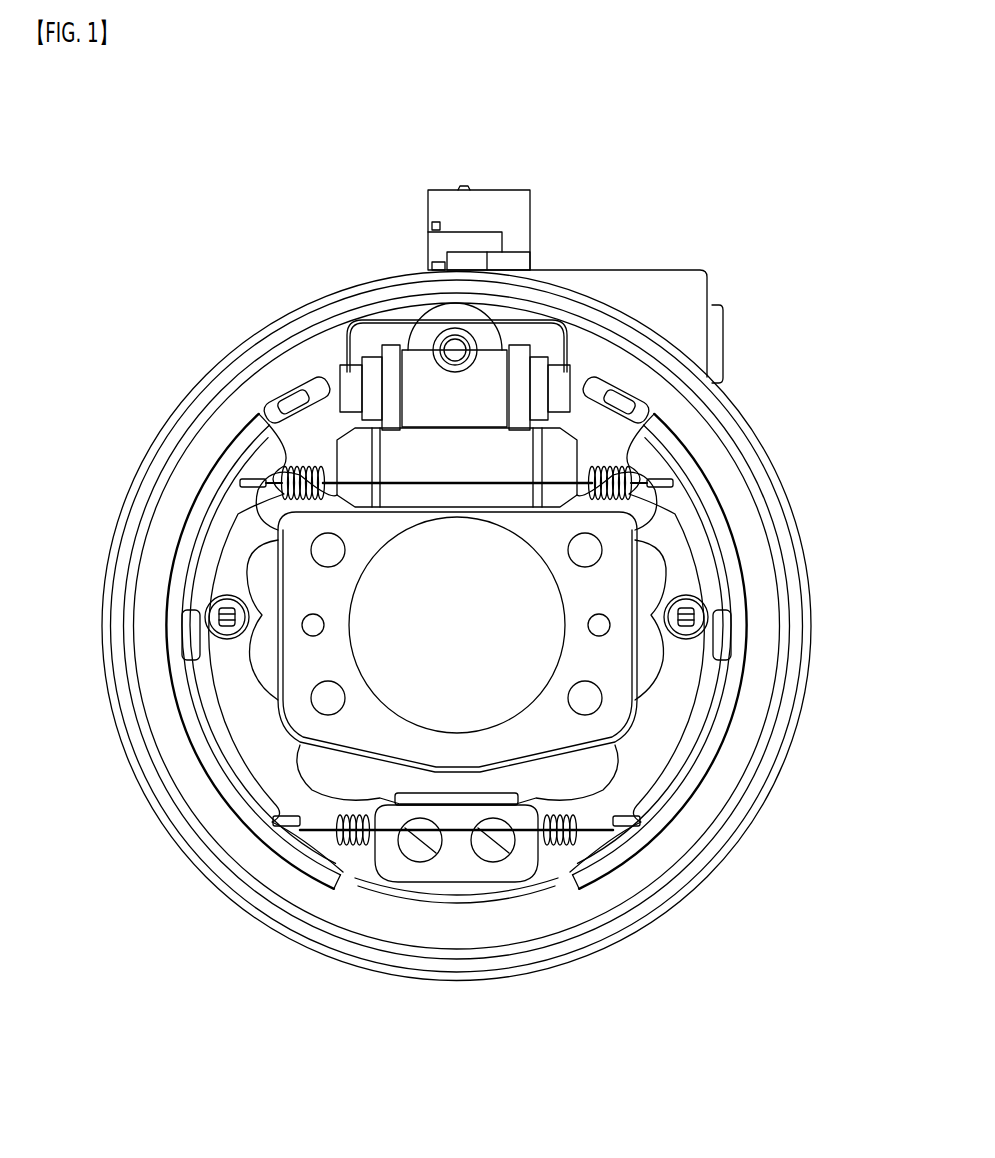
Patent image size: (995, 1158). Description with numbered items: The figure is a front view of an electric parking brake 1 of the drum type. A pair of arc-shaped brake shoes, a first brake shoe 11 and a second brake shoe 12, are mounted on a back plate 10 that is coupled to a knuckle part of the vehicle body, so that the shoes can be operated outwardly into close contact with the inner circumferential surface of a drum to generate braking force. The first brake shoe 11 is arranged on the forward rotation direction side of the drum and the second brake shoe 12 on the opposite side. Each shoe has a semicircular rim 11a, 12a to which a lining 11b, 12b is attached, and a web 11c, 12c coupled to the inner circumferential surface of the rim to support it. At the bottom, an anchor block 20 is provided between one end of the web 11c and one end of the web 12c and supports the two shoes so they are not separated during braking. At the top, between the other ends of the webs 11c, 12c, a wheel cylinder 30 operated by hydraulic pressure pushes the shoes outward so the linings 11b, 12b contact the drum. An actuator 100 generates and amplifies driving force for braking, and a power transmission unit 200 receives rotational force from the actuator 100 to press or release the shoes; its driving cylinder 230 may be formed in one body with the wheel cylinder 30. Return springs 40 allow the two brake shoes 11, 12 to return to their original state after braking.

The electric parking brake 1 is at (173, 150).
The back plate 10 is at (610, 535).
The first brake shoe 11 is at (50, 782).
The rim 11a is at (210, 760).
The lining 11b is at (193, 730).
The web 11c is at (270, 782).
The second brake shoe 12 is at (863, 782).
The rim 12a is at (695, 760).
The lining 12b is at (722, 730).
The web 12c is at (645, 782).
The anchor block 20 is at (455, 867).
The wheel cylinder 30 is at (400, 452).
The return spring 40 is at (287, 480).
The actuator 100 is at (602, 271).
The power transmission unit 200 is at (390, 337).
The driving cylinder 230 is at (418, 373).